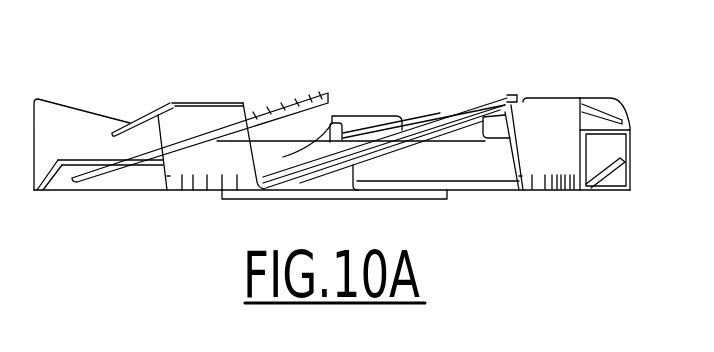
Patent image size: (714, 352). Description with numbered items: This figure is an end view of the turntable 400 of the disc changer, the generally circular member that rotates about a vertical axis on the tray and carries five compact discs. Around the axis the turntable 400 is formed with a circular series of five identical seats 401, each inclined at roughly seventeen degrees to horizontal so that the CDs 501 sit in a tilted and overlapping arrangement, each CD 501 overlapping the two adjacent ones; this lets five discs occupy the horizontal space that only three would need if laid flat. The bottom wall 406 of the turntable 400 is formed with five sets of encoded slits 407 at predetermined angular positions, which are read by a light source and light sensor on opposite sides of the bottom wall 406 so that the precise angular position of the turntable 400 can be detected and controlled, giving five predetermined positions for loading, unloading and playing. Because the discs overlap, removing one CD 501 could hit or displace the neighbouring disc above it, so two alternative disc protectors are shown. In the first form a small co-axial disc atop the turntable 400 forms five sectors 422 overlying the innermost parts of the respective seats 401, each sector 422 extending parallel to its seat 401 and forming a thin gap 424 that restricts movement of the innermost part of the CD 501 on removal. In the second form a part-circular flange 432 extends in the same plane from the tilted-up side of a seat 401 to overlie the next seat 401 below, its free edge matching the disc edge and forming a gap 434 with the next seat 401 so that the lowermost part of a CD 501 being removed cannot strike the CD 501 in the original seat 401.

The turntable 400 is at (571, 88).
The seat 401 is at (510, 138).
The bottom wall 406 is at (170, 180).
The encoded slits 407 is at (203, 188).
The sector 422 is at (363, 118).
The gap 424 is at (400, 118).
The part-circular flange 432 is at (283, 117).
The gap 434 is at (298, 134).
The CD 501 is at (191, 139).